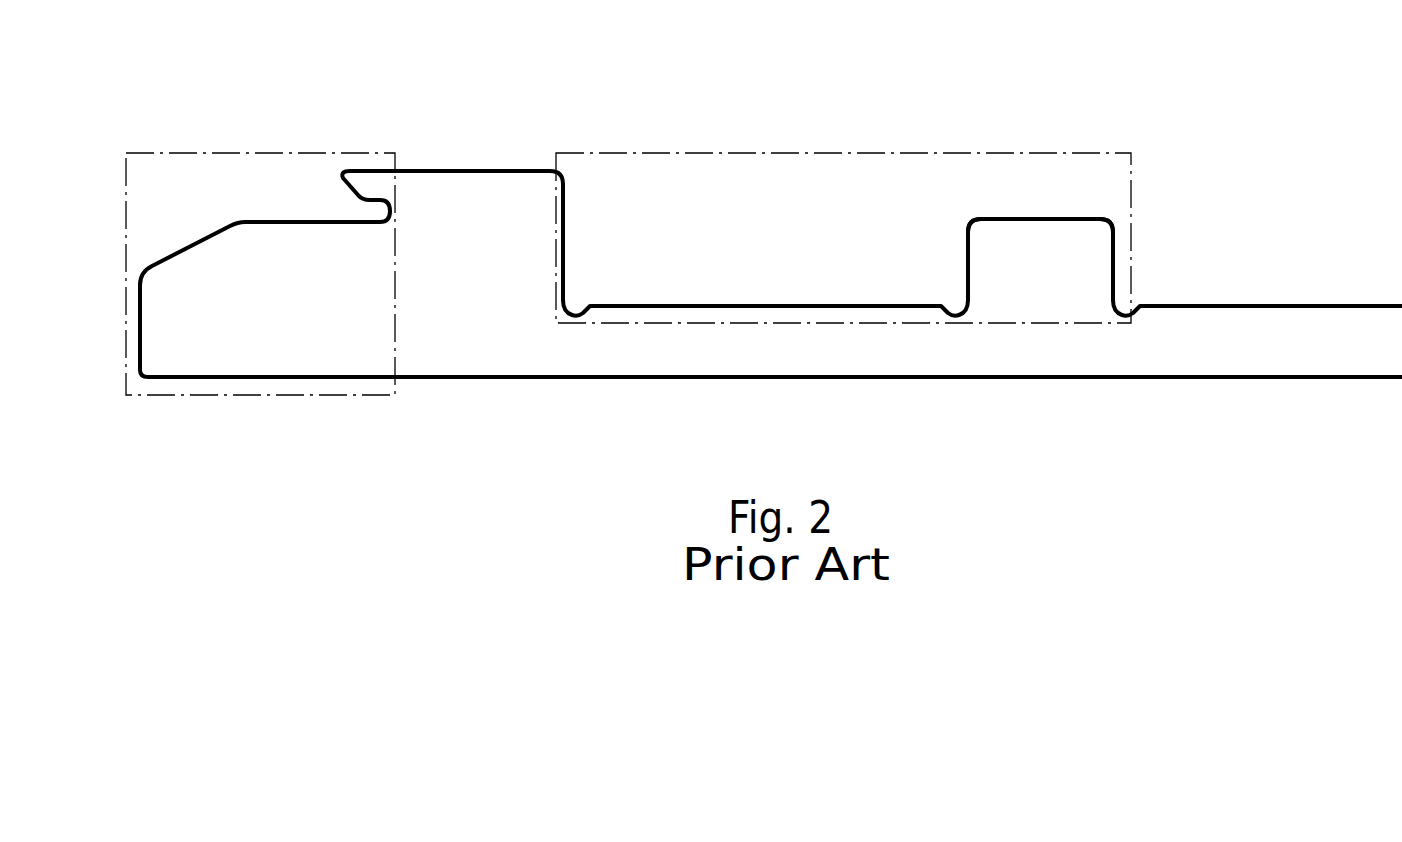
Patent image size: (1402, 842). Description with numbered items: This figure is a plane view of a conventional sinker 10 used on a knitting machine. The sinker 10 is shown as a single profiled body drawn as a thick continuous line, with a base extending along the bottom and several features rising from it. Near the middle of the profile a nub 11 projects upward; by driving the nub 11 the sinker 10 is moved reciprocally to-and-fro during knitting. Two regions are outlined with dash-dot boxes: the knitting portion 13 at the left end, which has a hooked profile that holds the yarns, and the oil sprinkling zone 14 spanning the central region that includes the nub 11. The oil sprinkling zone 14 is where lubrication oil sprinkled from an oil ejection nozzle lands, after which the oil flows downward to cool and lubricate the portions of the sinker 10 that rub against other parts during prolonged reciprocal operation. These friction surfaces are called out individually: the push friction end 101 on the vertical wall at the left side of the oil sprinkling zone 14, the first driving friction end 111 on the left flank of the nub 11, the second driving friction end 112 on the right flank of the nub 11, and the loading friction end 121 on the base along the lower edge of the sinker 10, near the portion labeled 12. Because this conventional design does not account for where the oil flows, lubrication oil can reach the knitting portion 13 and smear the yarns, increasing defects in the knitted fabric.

The sinker 10 is at (1230, 143).
The nub 11 is at (1030, 227).
The base plate 12 is at (808, 365).
The knitting portion 13 is at (227, 153).
The oil sprinkling zone 14 is at (857, 153).
The push friction end 101 is at (565, 245).
The first driving friction end 111 is at (965, 268).
The second driving friction end 112 is at (1113, 270).
The loading friction end 121 is at (975, 378).